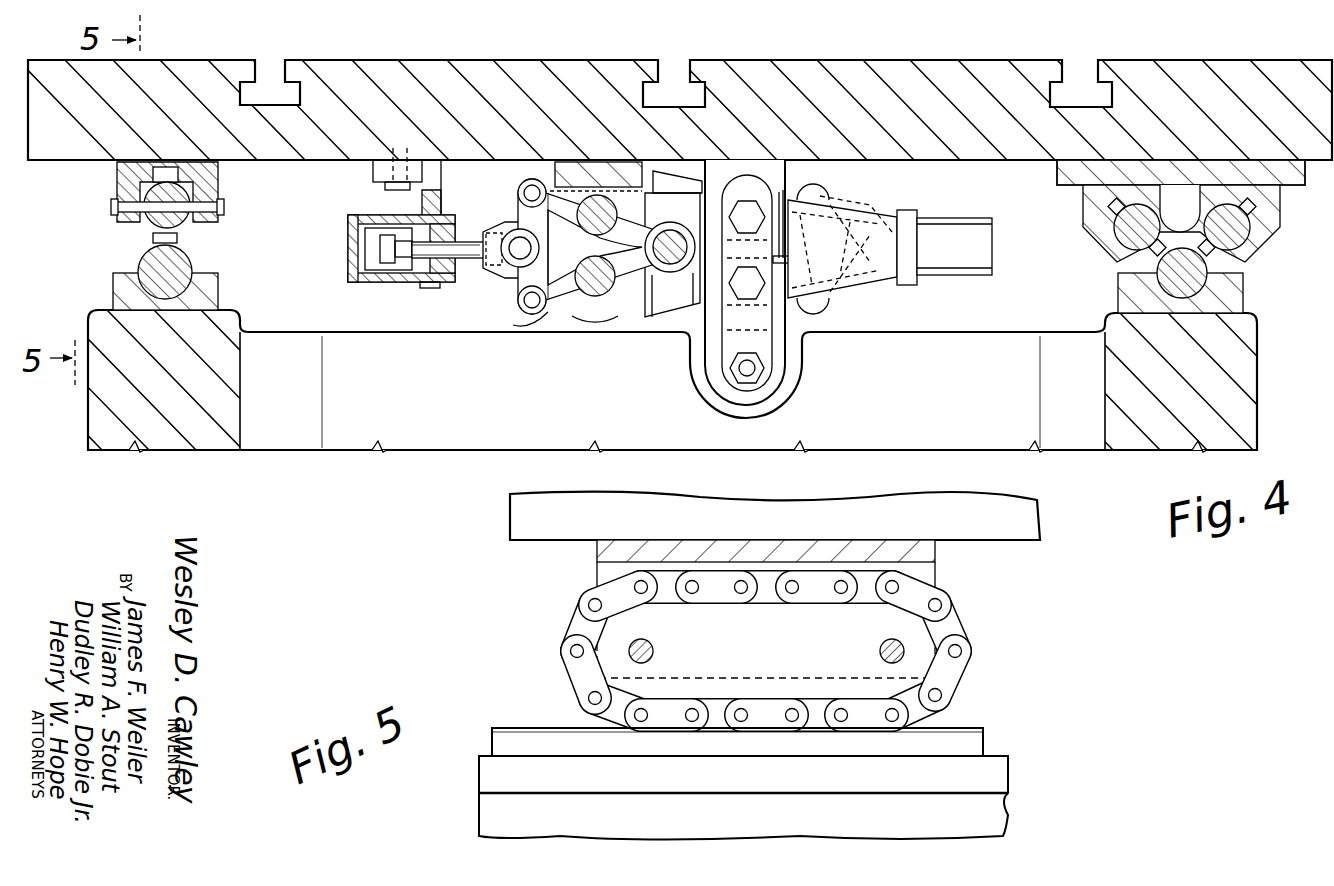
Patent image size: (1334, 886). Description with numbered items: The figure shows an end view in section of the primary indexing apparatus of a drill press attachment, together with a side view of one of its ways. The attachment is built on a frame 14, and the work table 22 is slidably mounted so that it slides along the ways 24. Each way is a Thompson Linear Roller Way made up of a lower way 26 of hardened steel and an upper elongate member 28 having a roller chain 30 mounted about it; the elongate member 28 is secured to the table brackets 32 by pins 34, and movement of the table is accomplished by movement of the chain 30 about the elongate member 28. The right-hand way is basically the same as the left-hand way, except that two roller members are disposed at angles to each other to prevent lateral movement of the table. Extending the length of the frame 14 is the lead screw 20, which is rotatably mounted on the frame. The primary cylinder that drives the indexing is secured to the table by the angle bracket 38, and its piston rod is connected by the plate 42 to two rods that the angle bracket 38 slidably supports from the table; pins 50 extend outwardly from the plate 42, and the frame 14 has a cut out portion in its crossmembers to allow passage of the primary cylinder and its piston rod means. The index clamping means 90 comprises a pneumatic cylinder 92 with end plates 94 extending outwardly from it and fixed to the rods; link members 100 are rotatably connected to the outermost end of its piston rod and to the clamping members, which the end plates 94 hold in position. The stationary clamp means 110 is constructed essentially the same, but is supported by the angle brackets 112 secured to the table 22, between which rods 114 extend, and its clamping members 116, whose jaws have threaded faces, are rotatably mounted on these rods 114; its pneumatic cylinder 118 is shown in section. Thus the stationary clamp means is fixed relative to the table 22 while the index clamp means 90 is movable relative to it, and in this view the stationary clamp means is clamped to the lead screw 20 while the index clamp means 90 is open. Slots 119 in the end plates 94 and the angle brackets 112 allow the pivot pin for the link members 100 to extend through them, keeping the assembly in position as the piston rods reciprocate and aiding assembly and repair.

In FIG. 4, the frame 14 is at (927, 397).
In FIG. 4, the lead screw 20 is at (687, 305).
In FIG. 4, the work table 22 is at (808, 92).
In FIG. 4, the ways 24 is at (687, 236).
In FIG. 4, the lower way 26 is at (192, 260).
In FIG. 4, the elongate member 28 is at (1247, 228).
In FIG. 5, the elongate member 28 is at (782, 646).
In FIG. 5, the roller chain 30 is at (952, 629).
In FIG. 4, the table brackets 32 is at (205, 170).
In FIG. 5, the table brackets 32 is at (608, 555).
In FIG. 4, the pins 34 is at (221, 207).
In FIG. 5, the pins 34 is at (650, 643).
In FIG. 4, the angle bracket 38 is at (777, 299).
In FIG. 4, the plate 42 is at (750, 322).
In FIG. 4, the pins 50 is at (783, 192).
In FIG. 4, the index clamping means 90 is at (842, 198).
In FIG. 4, the pneumatic cylinder 92 is at (943, 233).
In FIG. 4, the end plates 94 is at (861, 247).
In FIG. 4, the link members 100 is at (852, 202).
In FIG. 4, the stationary clamp means 110 is at (503, 286).
In FIG. 4, the angle brackets 112 is at (590, 320).
In FIG. 4, the rods 114 is at (590, 210).
In FIG. 4, the clamping members 116 is at (648, 300).
In FIG. 4, the pneumatic cylinder 118 is at (367, 282).
In FIG. 4, the slots 119 is at (540, 240).